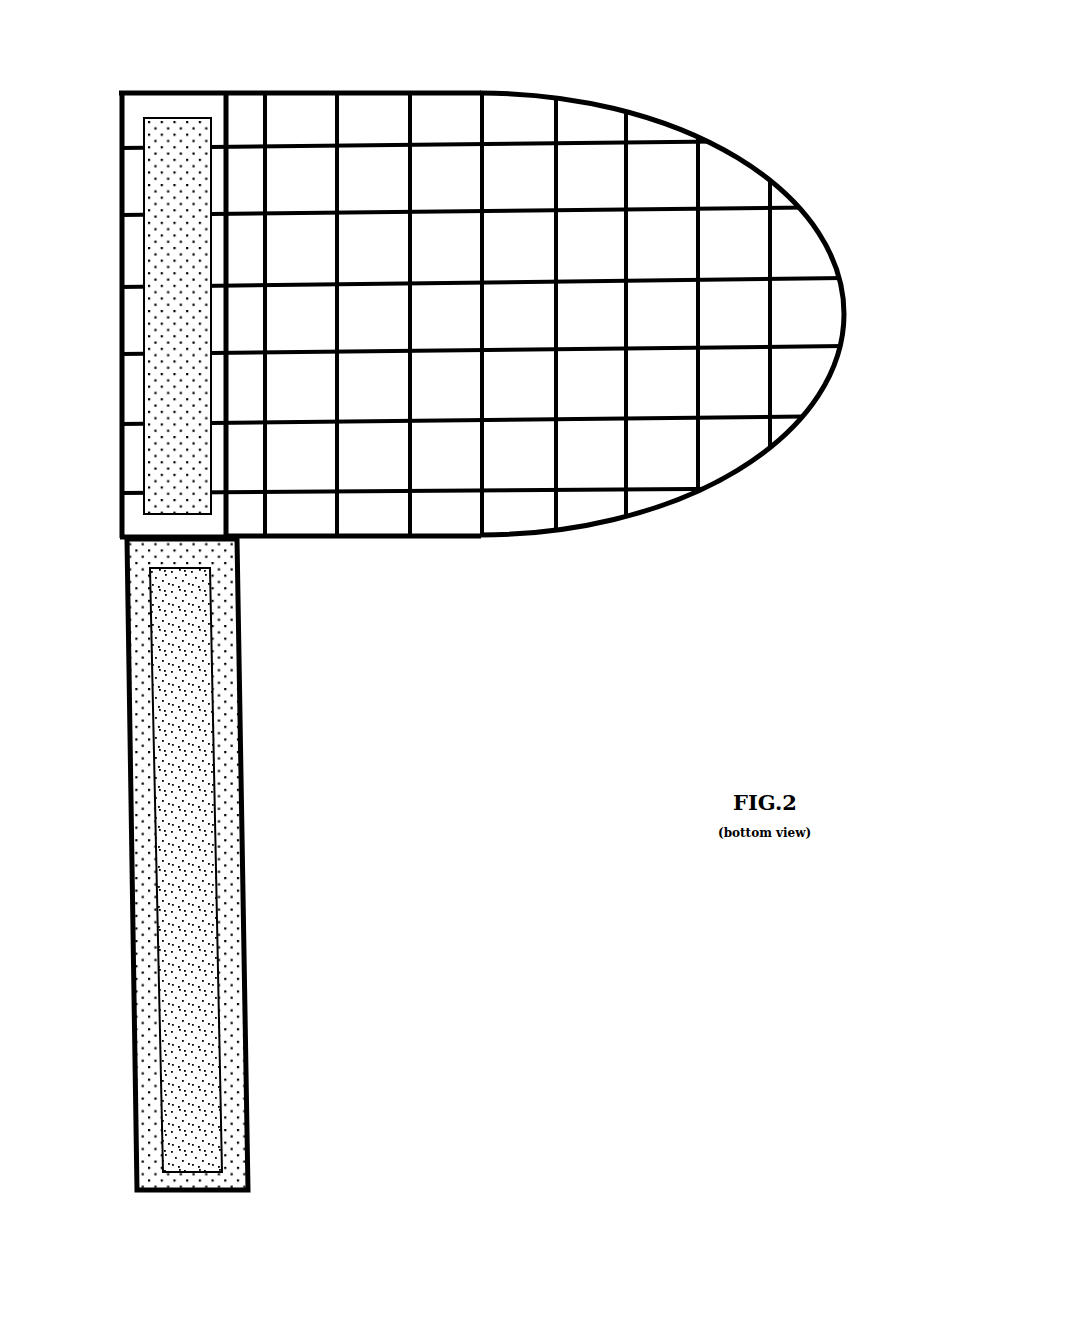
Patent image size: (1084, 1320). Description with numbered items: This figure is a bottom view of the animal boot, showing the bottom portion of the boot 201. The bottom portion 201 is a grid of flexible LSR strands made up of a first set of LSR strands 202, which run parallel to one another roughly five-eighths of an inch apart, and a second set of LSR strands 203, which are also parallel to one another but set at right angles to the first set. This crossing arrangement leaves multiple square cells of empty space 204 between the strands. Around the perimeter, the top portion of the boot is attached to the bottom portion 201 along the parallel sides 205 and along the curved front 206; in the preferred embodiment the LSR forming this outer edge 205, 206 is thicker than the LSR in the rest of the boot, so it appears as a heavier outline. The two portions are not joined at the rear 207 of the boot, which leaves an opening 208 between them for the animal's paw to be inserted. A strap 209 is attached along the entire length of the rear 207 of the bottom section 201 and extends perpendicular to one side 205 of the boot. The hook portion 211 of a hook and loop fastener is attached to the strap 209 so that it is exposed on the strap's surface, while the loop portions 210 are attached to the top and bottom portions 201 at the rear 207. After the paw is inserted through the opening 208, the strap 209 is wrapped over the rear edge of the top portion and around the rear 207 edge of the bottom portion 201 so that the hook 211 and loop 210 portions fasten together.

The bottom portion of the boot 201 is at (523, 305).
The first set of LSR strands 202 is at (547, 545).
The second set of LSR strands 203 is at (827, 222).
The square cells of empty space 204 is at (740, 391).
The parallel sides 205 is at (383, 520).
The curved front 206 is at (782, 452).
The rear of the boot 207 is at (114, 353).
The opening 208 is at (113, 252).
The strap 209 is at (258, 793).
The loop portions of the hook and loop fastener 210 is at (194, 460).
The hook portion of the hook and loop fastener 211 is at (209, 953).